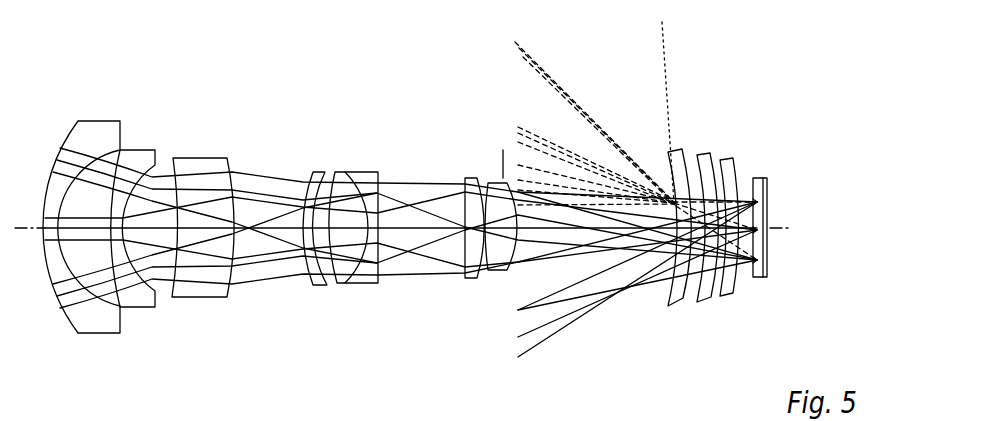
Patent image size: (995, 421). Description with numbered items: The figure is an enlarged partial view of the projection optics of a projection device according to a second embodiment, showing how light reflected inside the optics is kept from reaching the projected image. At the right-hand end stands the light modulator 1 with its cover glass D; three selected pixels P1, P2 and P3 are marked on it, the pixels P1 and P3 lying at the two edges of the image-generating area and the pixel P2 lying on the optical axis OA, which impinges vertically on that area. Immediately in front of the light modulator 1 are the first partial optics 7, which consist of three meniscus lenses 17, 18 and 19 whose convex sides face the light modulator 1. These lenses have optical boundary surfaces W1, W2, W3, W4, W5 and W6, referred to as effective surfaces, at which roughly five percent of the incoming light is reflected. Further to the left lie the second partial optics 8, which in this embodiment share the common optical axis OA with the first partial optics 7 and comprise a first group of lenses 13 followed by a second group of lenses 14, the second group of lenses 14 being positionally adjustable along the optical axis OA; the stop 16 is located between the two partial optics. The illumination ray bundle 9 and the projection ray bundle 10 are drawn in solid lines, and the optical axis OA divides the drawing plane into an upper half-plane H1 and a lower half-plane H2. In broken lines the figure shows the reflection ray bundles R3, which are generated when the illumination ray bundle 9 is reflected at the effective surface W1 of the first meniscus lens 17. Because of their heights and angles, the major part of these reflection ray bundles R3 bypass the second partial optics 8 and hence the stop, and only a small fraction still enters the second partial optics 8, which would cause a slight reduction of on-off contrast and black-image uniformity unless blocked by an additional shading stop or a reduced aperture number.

The light modulator 1 is at (788, 217).
The first partial optics 7 is at (708, 232).
The second partial optics 8 is at (279, 205).
The illumination ray bundle 9 is at (547, 343).
The projection ray bundle 10 is at (282, 178).
The first group of lenses 13 is at (504, 318).
The second group of lenses 14 is at (207, 335).
The stop 16 is at (502, 168).
The first meniscus lens 17 is at (727, 298).
The second meniscus lens 18 is at (727, 203).
The third meniscus lens 19 is at (653, 264).
The optical axis OA is at (250, 233).
The upper half-plane H1 is at (395, 138).
The lower half-plane H2 is at (333, 368).
The reflection ray bundles R3 is at (568, 79).
The effective surface W1 is at (765, 226).
The effective surface W2 is at (763, 213).
The effective surface W3 is at (719, 298).
The effective surface W4 is at (700, 302).
The effective surface W5 is at (722, 203).
The effective surface W6 is at (653, 245).
The pixel P1 is at (762, 201).
The pixel P2 is at (772, 228).
The pixel P3 is at (766, 260).
The cover glass D is at (762, 278).